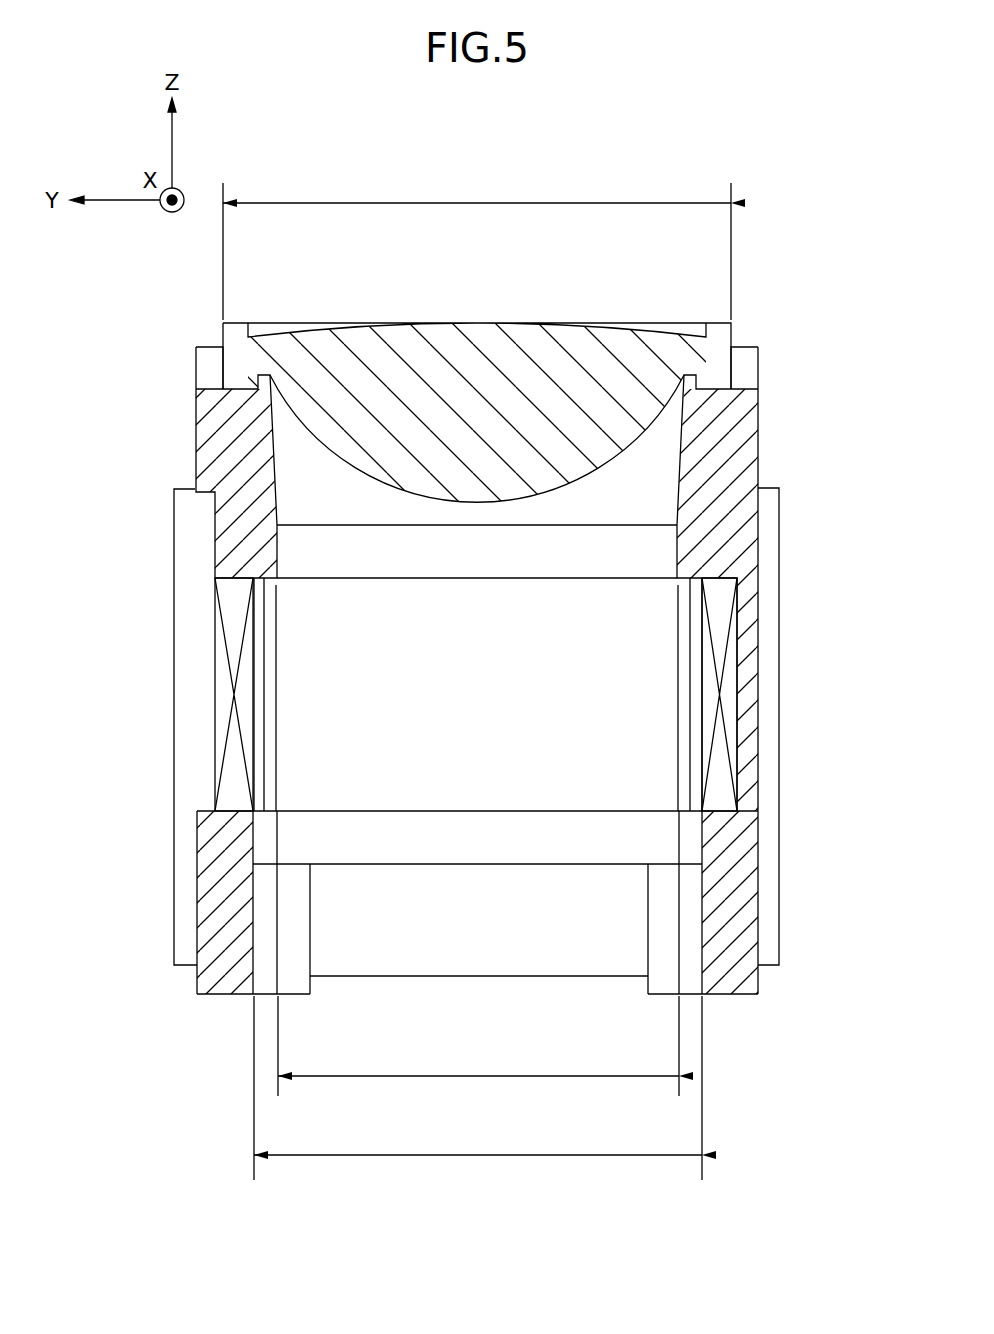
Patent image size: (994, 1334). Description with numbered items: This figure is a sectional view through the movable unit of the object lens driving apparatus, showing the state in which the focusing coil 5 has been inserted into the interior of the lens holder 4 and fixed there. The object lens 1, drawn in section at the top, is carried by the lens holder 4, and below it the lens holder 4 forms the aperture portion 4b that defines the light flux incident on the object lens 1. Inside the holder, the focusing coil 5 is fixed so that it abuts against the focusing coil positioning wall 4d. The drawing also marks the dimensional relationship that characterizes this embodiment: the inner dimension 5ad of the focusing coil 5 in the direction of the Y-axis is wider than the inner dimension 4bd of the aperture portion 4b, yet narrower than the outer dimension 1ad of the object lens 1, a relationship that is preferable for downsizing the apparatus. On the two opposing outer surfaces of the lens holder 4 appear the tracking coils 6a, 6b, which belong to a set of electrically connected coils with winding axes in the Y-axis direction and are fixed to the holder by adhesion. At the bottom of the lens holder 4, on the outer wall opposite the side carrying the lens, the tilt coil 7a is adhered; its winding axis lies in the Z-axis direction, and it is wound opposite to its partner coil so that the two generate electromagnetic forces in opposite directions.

The object lens 1 is at (587, 338).
The lens holder 4 is at (195, 442).
The aperture portion 4b is at (627, 560).
The focusing coil positioning wall 4d is at (725, 697).
The focusing coil 5 is at (238, 790).
The tracking coil 6a is at (192, 547).
The tracking coil 6b is at (770, 553).
The tilt coil 7a is at (603, 958).
The outer dimension of the object lens 1ad is at (477, 248).
The inner dimension of the aperture portion 4bd is at (478, 1051).
The inner dimension of the focusing coil 5ad is at (478, 1091).